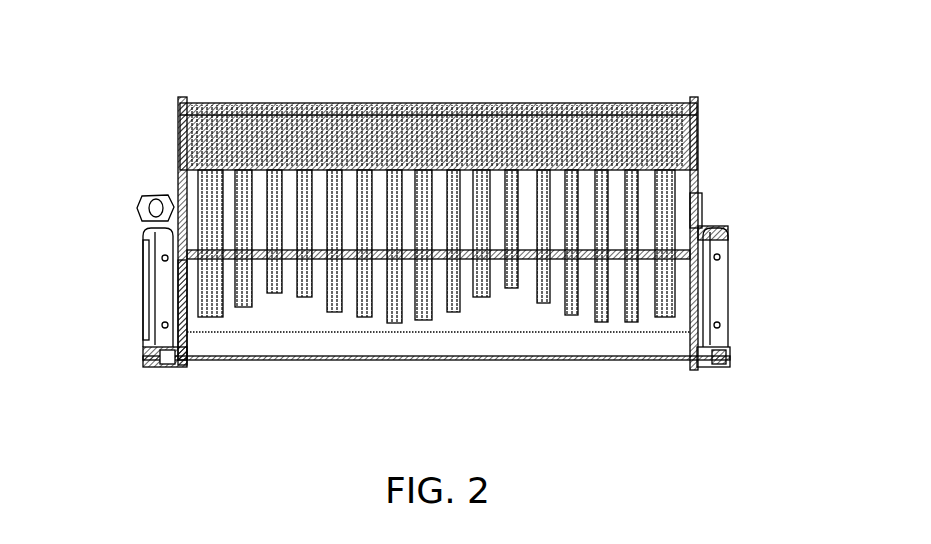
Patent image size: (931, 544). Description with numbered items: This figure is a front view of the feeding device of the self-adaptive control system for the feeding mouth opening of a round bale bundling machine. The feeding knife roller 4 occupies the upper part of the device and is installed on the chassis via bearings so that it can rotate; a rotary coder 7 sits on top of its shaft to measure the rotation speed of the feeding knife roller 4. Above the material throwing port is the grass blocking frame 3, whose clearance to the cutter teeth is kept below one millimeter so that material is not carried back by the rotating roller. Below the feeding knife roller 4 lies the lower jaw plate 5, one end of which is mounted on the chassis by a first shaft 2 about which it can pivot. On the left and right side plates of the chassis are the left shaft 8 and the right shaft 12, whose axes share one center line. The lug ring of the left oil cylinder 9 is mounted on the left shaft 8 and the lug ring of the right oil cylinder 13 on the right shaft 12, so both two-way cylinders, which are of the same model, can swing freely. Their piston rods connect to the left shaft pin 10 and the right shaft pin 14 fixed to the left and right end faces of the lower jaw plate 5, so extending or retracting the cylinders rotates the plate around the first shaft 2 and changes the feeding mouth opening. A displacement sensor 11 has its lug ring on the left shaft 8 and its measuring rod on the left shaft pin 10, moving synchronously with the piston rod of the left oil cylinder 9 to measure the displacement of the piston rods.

The first shaft 2 is at (195, 190).
The grass blocking frame 3 is at (380, 140).
The feeding knife roller 4 is at (468, 187).
The lower jaw plate 5 is at (505, 322).
The rotary coder 7 is at (140, 197).
The left shaft 8 is at (148, 232).
The left oil cylinder 9 is at (170, 298).
The left shaft pin 10 is at (158, 365).
The displacement sensor 11 is at (142, 318).
The right shaft 12 is at (705, 230).
The right oil cylinder 13 is at (717, 285).
The right shaft pin 14 is at (700, 365).